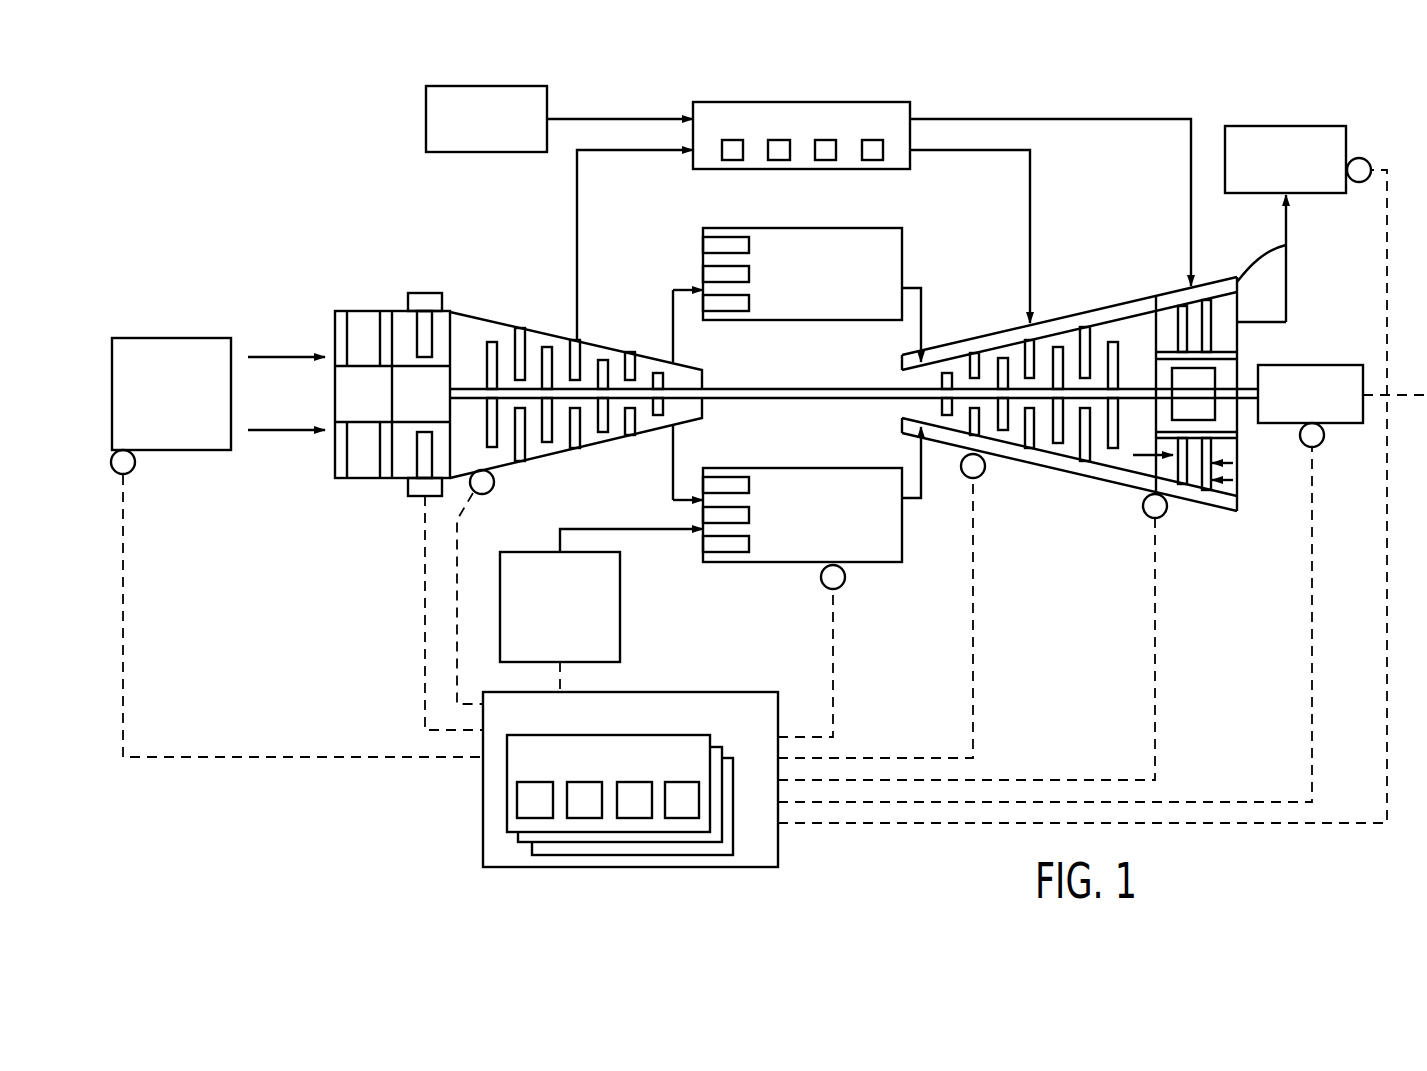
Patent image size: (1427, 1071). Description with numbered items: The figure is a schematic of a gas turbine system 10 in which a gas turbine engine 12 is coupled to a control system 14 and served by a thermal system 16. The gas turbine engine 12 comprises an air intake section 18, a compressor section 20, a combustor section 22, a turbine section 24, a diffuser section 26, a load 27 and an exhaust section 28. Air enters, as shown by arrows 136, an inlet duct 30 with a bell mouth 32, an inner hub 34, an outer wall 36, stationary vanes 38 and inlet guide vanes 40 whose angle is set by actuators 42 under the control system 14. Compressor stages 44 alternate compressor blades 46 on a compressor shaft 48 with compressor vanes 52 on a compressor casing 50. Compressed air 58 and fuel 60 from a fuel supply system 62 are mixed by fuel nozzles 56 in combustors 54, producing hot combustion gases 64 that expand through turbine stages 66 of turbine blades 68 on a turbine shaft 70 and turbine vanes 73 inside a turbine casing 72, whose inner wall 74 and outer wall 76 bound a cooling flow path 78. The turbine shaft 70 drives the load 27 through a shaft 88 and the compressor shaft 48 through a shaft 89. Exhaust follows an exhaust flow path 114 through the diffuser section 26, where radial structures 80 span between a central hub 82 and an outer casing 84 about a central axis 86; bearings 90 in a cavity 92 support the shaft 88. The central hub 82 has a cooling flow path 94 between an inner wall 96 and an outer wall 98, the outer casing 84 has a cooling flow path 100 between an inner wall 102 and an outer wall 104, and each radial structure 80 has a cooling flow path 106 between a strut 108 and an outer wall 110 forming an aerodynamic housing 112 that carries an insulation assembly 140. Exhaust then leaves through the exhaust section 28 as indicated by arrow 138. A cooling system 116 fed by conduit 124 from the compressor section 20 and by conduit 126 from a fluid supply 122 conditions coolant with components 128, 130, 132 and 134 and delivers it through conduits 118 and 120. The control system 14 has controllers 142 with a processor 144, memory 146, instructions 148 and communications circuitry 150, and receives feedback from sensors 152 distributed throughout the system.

The gas turbine system 10 is at (262, 192).
The gas turbine engine 12 is at (1058, 575).
The control system 14 is at (630, 692).
The thermal system 16 is at (1258, 97).
The air intake section 18 is at (172, 338).
The compressor section 20 is at (545, 315).
The combustor section 22 is at (855, 217).
The turbine section 24 is at (1000, 300).
The diffuser section 26 is at (1273, 558).
The load 27 is at (1310, 365).
The exhaust section 28 is at (1285, 126).
The inlet duct 30 is at (340, 480).
The bell mouth 32 is at (335, 311).
The inner hub 34 is at (335, 378).
The outer wall 36 is at (335, 325).
The stationary vanes 38 is at (362, 311).
The inlet guide vanes 40 is at (435, 332).
The actuators 42 is at (425, 293).
The compressor stages 44 is at (630, 447).
The compressor blades 46 is at (490, 443).
The compressor shaft 48 is at (686, 392).
The compressor casing 50 is at (510, 322).
The compressor vanes 52 is at (632, 355).
The combustors 54 is at (875, 228).
The fuel nozzles 56 is at (723, 222).
The compressed air 58 is at (673, 327).
The fuel 60 is at (640, 530).
The fuel supply system 62 is at (620, 608).
The hot combustion gases 64 is at (921, 312).
The turbine stages 66 is at (1032, 448).
The turbine blades 68 is at (1058, 347).
The turbine shaft 70 is at (915, 398).
The turbine casing 72 is at (1012, 470).
The turbine vanes 73 is at (975, 355).
The inner wall 74 is at (1130, 473).
The outer wall 76 is at (1100, 473).
The cooling flow path 78 is at (1083, 462).
The radial structures 80 is at (1162, 347).
The central hub 82 is at (1165, 325).
The outer casing 84 is at (1167, 291).
The central axis 86 is at (1398, 396).
The shaft 88 is at (1243, 403).
The shaft 89 is at (726, 399).
The bearings 90 is at (1170, 412).
The cavity 92 is at (1158, 378).
The cooling flow path 94 is at (1240, 360).
The inner wall 96 is at (1232, 365).
The outer wall 98 is at (1228, 323).
The cooling flow path 100 is at (1243, 283).
The inner wall 102 is at (1292, 243).
The outer wall 104 is at (1237, 278).
The cooling flow path 106 is at (1208, 492).
The strut 108 is at (1197, 488).
The outer wall 110 is at (1248, 493).
The aerodynamic housing 112 is at (1236, 462).
The exhaust flow path 114 is at (1155, 465).
The cooling system 116 is at (805, 102).
The coolant supply conduit 118 is at (1030, 150).
The coolant supply conduit 120 is at (1075, 119).
The fluid supply 122 is at (480, 152).
The coolant supply conduit 124 is at (628, 152).
The coolant supply conduit 126 is at (627, 118).
The conditioner component 128 is at (722, 148).
The cooler component 130 is at (779, 160).
The compressor component 132 is at (836, 150).
The flow controller component 134 is at (884, 148).
The arrows 136 is at (282, 357).
The arrow 138 is at (1288, 283).
The insulation assembly 140 is at (1240, 485).
The controllers 142 is at (507, 783).
The processor 144 is at (535, 818).
The memory 146 is at (585, 818).
The instructions 148 is at (635, 818).
The communications circuitry 150 is at (683, 818).
The sensors 152 is at (134, 470).